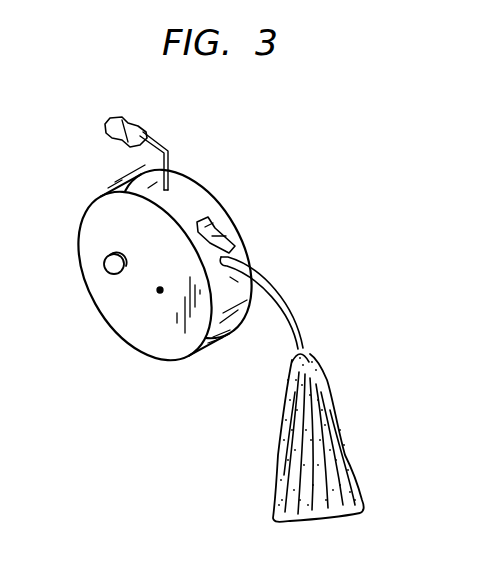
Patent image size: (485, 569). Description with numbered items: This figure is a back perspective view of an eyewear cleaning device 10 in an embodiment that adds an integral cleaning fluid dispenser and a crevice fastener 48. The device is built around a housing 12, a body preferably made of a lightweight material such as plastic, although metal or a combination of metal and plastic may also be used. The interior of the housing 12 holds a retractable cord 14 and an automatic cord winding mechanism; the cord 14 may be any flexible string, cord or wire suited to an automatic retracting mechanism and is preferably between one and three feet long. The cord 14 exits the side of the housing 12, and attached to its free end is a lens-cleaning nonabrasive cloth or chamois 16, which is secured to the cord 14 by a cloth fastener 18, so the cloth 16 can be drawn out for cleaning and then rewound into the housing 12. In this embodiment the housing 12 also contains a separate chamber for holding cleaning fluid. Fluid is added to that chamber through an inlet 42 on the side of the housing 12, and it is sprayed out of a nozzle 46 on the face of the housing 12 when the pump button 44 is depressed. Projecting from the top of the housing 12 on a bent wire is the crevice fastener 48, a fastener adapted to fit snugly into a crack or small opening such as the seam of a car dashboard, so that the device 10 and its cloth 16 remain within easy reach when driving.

The eyewear cleaning device 10 is at (246, 161).
The housing 12 is at (113, 326).
The retractable cord 14 is at (297, 314).
The lens-cleaning nonabrasive cloth 16 is at (347, 432).
The cloth fastener 18 is at (306, 351).
The inlet 42 is at (236, 229).
The pump button 44 is at (104, 266).
The nozzle 46 is at (160, 291).
The clip 48 is at (111, 120).